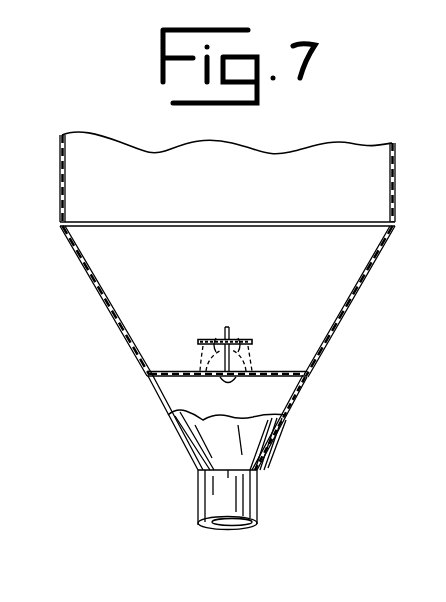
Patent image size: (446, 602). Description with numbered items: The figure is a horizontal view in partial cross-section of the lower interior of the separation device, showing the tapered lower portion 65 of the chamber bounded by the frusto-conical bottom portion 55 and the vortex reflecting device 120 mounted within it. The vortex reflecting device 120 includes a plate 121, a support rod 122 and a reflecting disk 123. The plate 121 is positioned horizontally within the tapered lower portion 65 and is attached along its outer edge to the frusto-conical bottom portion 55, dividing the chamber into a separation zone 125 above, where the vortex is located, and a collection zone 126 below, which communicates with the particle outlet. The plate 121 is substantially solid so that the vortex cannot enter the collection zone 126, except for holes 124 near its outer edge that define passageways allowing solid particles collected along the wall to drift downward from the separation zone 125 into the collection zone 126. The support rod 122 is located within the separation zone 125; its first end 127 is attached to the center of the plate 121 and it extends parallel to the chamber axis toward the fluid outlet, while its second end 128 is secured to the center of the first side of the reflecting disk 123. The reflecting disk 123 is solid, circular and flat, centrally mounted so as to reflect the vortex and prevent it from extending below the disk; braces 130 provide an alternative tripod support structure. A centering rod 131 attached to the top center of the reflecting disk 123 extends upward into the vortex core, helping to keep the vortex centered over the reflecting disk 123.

The tapered lower portion 65 is at (128, 262).
The vortex reflecting device 120 is at (227, 378).
The frusto-conical bottom portion 55 is at (135, 349).
The plate 121 is at (285, 384).
The holes 124 is at (147, 380).
The separation zone 125 is at (240, 316).
The second end of support rod 128 is at (220, 338).
The centering rod 131 is at (233, 352).
The support rod 122 is at (240, 338).
The reflecting disk 123 is at (203, 340).
The first end of support rod 127 is at (252, 352).
The braces 130 is at (232, 377).
The collection zone 126 is at (205, 409).